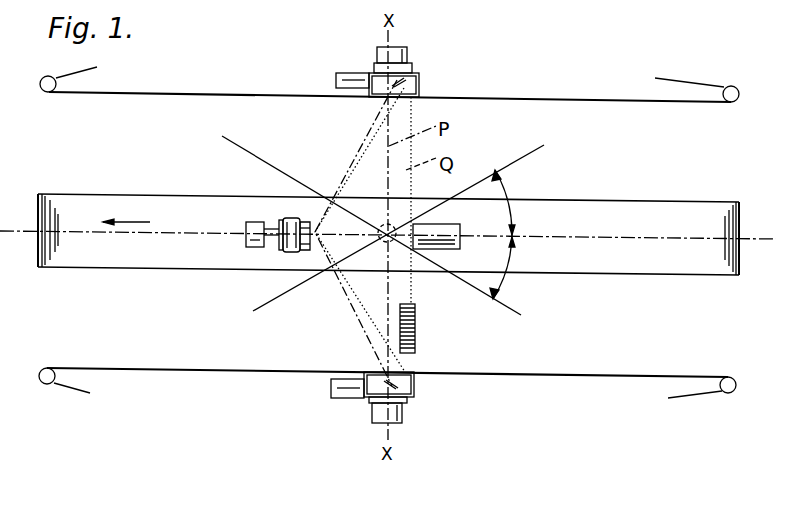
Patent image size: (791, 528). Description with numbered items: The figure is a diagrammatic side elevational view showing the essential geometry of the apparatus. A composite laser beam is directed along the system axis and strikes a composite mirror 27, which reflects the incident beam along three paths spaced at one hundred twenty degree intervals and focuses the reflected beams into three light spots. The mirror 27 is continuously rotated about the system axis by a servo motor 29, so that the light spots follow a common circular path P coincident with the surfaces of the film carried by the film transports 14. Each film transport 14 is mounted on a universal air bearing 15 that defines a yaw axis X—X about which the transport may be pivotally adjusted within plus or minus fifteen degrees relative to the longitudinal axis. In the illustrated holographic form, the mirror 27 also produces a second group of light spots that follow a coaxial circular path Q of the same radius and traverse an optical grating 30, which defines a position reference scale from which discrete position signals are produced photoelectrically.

The film transport 14 is at (593, 93).
The universal air bearing 15 is at (374, 52).
The composite mirror 27 is at (307, 218).
The servo motor 29 is at (257, 247).
The optical grating 30 is at (422, 327).